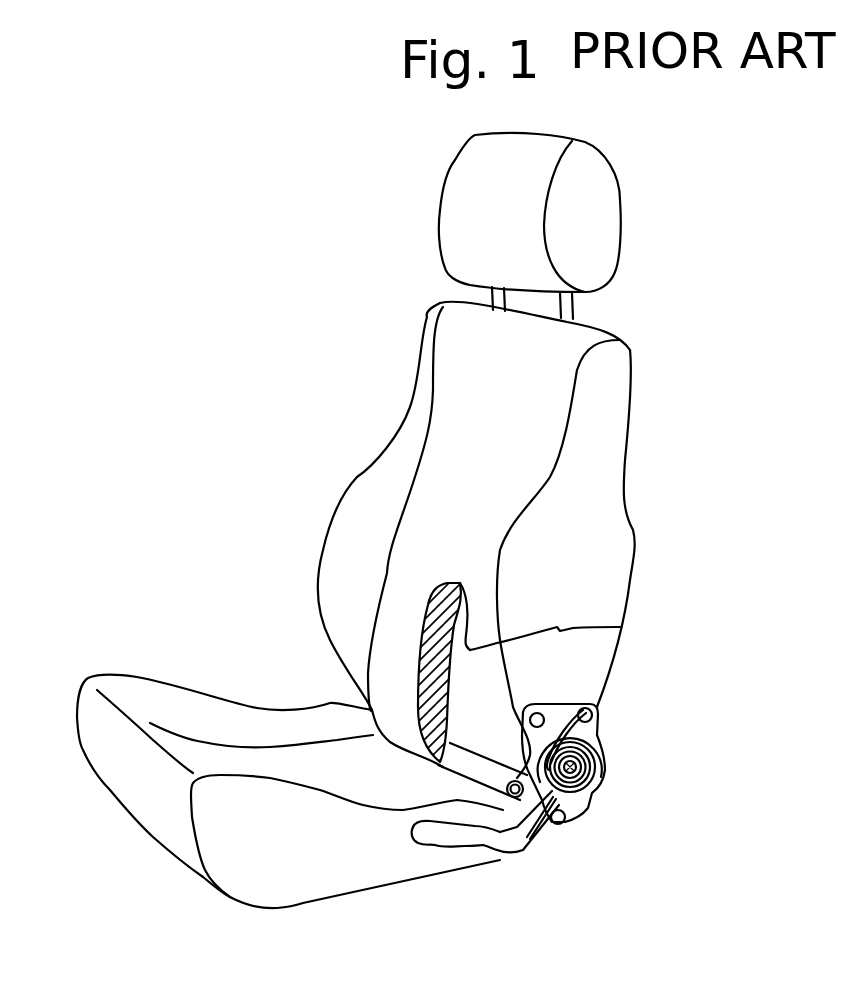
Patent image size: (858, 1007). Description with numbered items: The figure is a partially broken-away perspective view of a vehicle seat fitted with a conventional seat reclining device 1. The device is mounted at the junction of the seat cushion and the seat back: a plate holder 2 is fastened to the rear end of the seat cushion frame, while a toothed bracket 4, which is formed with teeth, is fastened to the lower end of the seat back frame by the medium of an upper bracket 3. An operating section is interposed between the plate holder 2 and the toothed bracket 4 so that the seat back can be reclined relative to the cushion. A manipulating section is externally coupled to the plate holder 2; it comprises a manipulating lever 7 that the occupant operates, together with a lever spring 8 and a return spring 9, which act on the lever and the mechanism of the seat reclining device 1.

The seat reclining device 1 is at (635, 753).
The plate holder 2 is at (563, 790).
The upper bracket 3 is at (594, 698).
The toothed bracket 4 is at (560, 706).
The manipulating lever 7 is at (458, 838).
The lever spring 8 is at (518, 775).
The return spring 9 is at (594, 783).